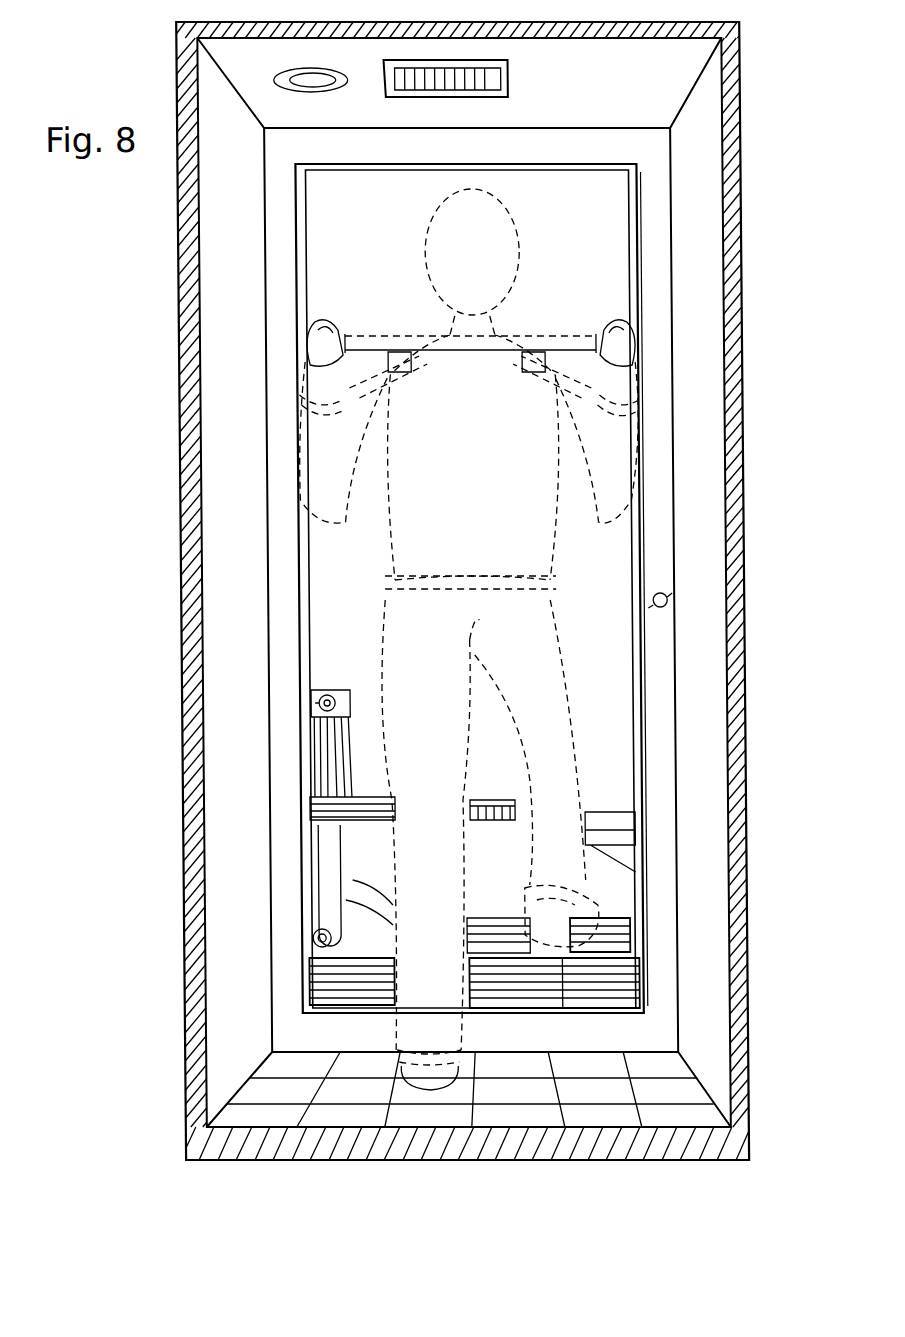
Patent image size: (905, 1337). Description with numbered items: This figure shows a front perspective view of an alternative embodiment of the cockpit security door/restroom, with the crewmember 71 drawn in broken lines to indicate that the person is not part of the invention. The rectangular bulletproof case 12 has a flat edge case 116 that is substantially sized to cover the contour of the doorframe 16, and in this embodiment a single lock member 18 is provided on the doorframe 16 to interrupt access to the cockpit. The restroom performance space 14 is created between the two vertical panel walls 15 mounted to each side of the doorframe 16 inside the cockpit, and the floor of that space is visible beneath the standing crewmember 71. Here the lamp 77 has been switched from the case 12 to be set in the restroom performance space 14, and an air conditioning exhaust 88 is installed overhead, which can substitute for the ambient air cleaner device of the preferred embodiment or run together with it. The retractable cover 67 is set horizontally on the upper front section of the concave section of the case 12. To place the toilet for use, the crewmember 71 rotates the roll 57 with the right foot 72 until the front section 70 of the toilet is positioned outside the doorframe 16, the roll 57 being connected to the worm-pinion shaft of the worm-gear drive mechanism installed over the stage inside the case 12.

The rectangular bulletproof case 12 is at (604, 615).
The restroom performance space 14 is at (537, 1122).
The vertical panel walls 15 is at (238, 645).
The doorframe 16 is at (637, 672).
The lock member 18 is at (662, 597).
The roll 57 is at (606, 918).
The retractable cover 67 is at (379, 250).
The front section of the toilet 70 is at (325, 836).
The crewmember 71 is at (470, 639).
The foot 72 is at (567, 898).
The lamp 77 is at (318, 83).
The air conditioning exhaust 88 is at (509, 78).
The flat edge case 116 is at (300, 590).